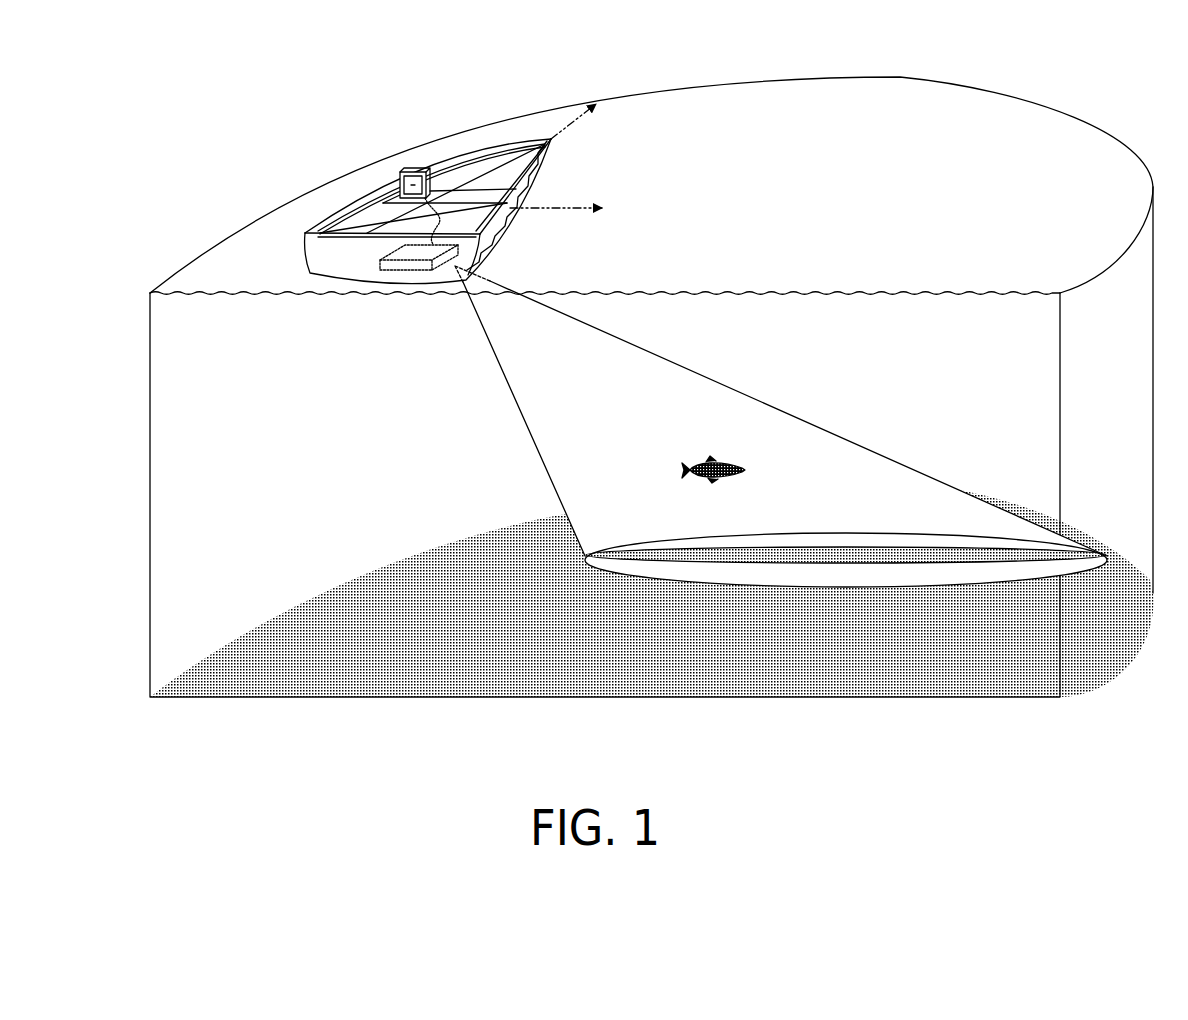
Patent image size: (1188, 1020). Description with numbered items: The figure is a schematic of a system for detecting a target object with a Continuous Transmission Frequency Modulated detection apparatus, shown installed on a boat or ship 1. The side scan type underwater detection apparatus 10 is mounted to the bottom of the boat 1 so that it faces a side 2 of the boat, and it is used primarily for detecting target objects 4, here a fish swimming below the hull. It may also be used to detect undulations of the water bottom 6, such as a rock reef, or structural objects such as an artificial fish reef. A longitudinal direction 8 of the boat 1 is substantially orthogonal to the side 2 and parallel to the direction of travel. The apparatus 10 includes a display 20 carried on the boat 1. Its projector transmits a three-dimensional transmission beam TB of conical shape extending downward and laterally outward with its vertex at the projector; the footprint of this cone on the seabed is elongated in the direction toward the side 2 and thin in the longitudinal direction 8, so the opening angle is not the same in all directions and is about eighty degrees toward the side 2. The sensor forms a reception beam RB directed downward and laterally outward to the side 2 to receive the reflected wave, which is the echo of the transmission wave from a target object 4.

The boat or ship 1 is at (502, 150).
The side of the boat 2 is at (565, 207).
The target object 4 is at (728, 463).
The water bottom 6 is at (280, 680).
The longitudinal direction of the boat 8 is at (552, 140).
The side scan type underwater detection apparatus 10 is at (415, 272).
The display 20 is at (398, 195).
The reception beam RB is at (1005, 552).
The transmission beam TB is at (735, 586).